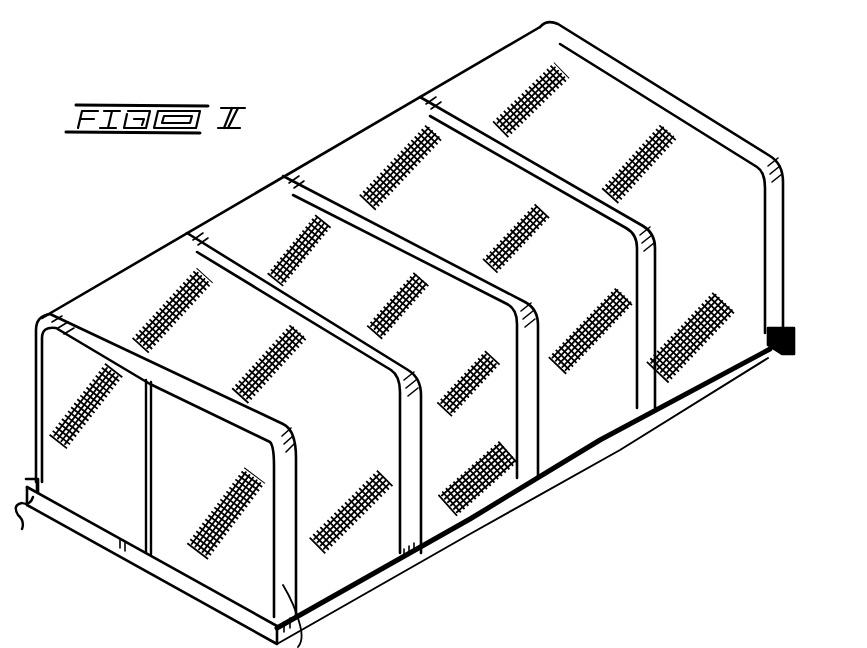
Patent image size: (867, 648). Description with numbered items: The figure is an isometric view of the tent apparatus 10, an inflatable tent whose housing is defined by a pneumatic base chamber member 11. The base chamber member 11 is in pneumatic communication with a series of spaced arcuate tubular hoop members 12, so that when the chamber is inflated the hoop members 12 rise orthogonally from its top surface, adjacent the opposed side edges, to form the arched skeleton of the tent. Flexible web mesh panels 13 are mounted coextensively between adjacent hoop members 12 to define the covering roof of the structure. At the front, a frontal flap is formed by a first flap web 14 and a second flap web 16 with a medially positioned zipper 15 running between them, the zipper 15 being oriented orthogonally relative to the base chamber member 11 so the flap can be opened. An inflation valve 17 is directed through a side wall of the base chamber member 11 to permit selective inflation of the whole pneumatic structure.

The tent apparatus 10 is at (669, 75).
The pneumatic base chamber member 11 is at (374, 580).
The arcuate tubular hoop members 12 is at (770, 270).
The flexible web mesh panels 13 is at (478, 80).
The first flap web 14 is at (111, 499).
The zipper 15 is at (151, 532).
The second flap web 16 is at (205, 559).
The inflation valve 17 is at (27, 520).